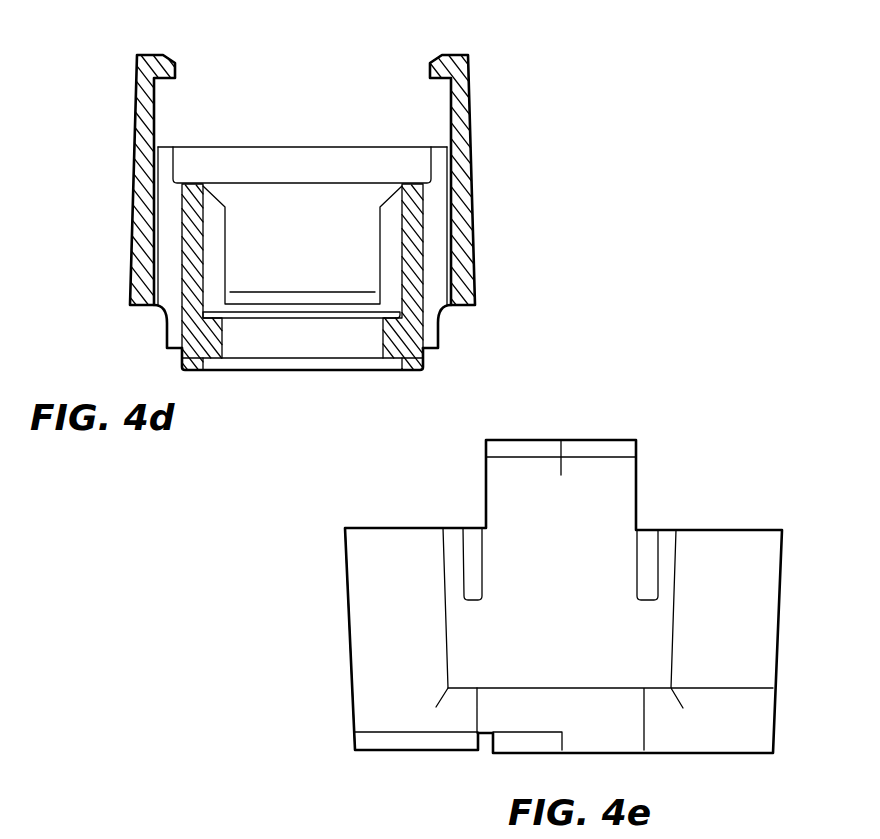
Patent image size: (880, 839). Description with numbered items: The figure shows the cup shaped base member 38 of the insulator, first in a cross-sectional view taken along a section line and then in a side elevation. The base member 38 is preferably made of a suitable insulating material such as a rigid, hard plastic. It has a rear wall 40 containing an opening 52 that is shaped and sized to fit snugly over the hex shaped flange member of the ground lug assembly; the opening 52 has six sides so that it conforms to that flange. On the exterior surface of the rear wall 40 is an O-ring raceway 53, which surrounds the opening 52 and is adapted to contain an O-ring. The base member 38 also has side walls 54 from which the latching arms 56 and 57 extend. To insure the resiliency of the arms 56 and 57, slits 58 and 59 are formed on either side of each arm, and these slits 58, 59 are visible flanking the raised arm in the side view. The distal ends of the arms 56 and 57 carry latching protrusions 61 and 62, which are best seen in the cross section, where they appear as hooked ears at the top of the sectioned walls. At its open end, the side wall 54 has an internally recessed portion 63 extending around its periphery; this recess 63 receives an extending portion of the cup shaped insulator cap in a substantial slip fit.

In FIG. 4d, the cup shaped base member 38 is at (474, 232).
In FIG. 4e, the cup shaped base member 38 is at (782, 634).
In FIG. 4d, the rear wall 40 is at (215, 317).
In FIG. 4d, the opening 52 is at (246, 340).
In FIG. 4d, the O-ring raceway 53 is at (363, 362).
In FIG. 4e, the O-ring raceway 53 is at (418, 740).
In FIG. 4e, the side wall 54 is at (380, 612).
In FIG. 4d, the latching arm 56 is at (131, 75).
In FIG. 4e, the latching arm 56 is at (614, 469).
In FIG. 4d, the latching arm 57 is at (474, 100).
In FIG. 4e, the slit 58 is at (472, 548).
In FIG. 4e, the slit 59 is at (645, 548).
In FIG. 4d, the latching protrusion 61 is at (428, 69).
In FIG. 4d, the latching protrusion 62 is at (177, 69).
In FIG. 4e, the latching protrusion 62 is at (525, 455).
In FIG. 4d, the internally recessed portion 63 is at (175, 163).